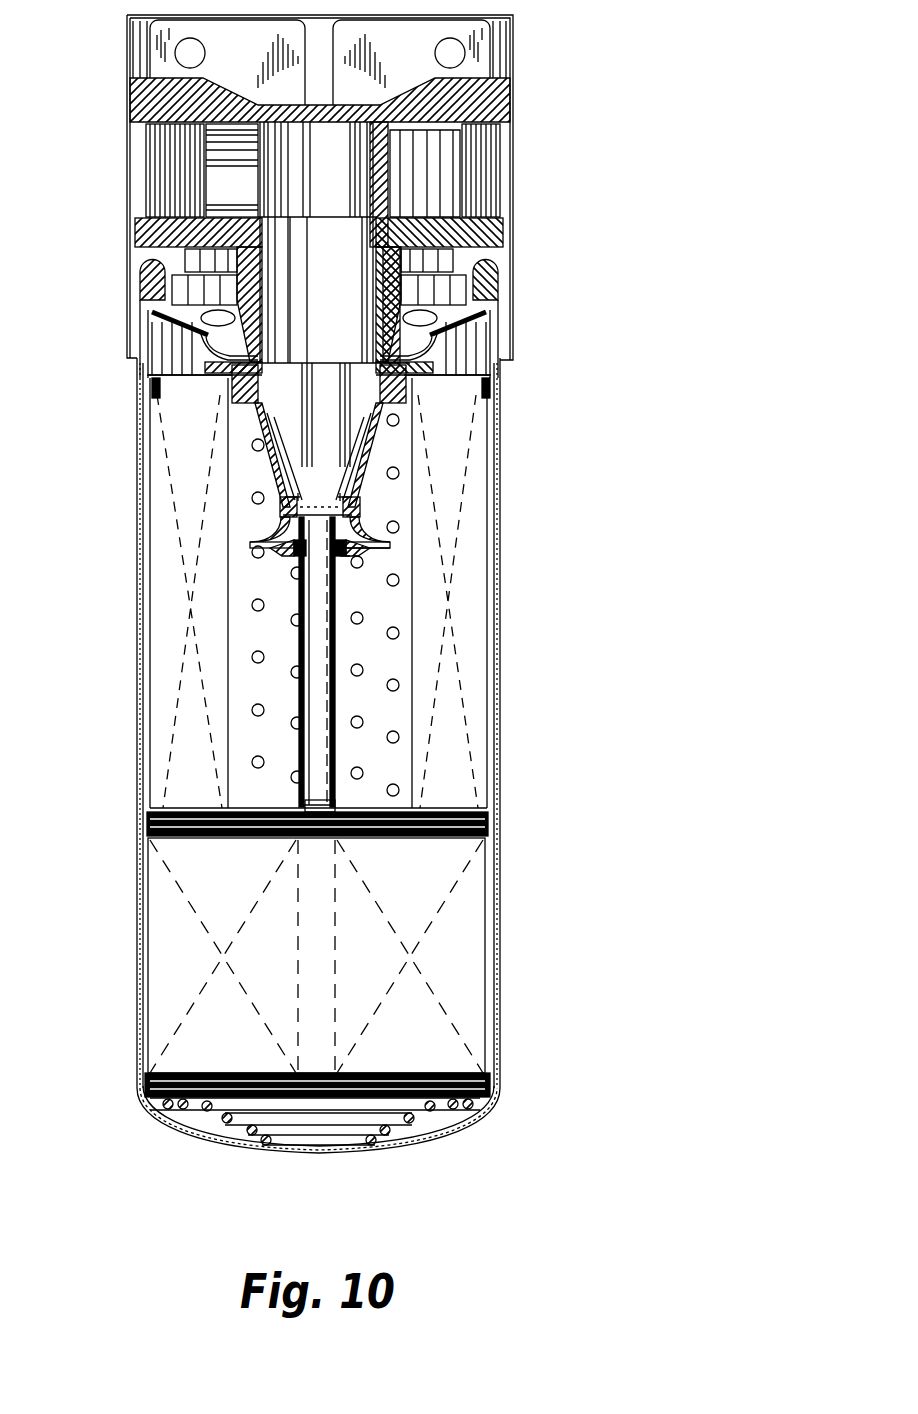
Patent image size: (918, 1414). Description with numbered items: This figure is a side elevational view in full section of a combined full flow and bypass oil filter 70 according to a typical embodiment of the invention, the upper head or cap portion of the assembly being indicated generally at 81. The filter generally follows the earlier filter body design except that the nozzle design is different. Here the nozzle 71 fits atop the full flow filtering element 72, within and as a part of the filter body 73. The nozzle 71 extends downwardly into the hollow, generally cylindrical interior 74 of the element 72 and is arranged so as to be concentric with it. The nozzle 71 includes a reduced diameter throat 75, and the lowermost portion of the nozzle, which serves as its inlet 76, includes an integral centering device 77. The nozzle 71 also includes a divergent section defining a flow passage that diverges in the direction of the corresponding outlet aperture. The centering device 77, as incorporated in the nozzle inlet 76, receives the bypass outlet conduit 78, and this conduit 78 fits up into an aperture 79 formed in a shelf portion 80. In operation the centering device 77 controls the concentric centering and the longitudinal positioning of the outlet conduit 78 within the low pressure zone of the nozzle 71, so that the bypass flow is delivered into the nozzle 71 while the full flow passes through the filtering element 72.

The filter assembly 70 is at (655, 408).
The nozzle 71 is at (310, 436).
The full flow filtering element 72 is at (463, 560).
The filter body 73 is at (552, 773).
The hollow cylindrical interior 74 is at (243, 735).
The reduced diameter throat 75 is at (328, 498).
The nozzle inlet 76 is at (375, 565).
The centering device 77 is at (246, 563).
The bypass outlet conduit 78 is at (322, 777).
The aperture 79 is at (300, 578).
The shelf portion 80 is at (300, 548).
The head assembly 81 is at (630, 166).